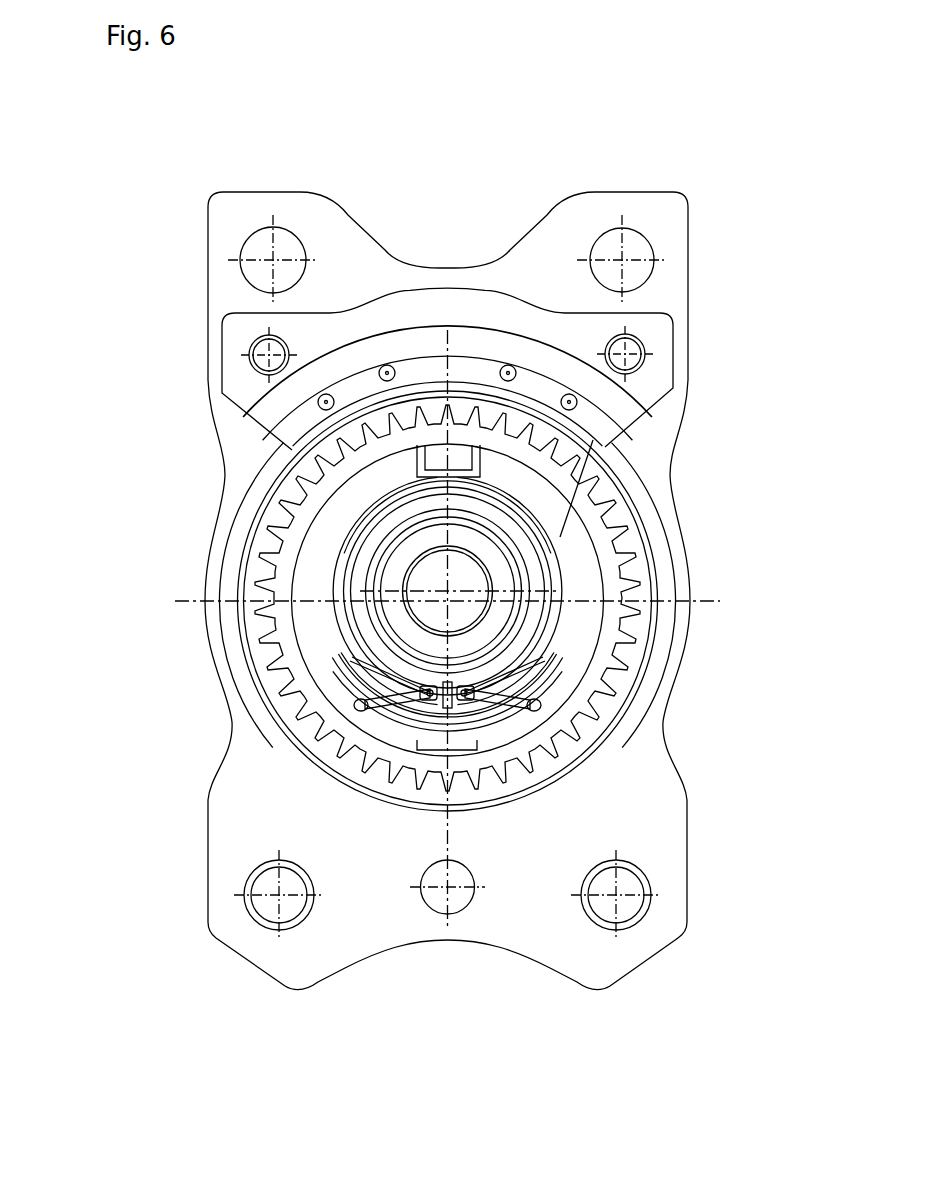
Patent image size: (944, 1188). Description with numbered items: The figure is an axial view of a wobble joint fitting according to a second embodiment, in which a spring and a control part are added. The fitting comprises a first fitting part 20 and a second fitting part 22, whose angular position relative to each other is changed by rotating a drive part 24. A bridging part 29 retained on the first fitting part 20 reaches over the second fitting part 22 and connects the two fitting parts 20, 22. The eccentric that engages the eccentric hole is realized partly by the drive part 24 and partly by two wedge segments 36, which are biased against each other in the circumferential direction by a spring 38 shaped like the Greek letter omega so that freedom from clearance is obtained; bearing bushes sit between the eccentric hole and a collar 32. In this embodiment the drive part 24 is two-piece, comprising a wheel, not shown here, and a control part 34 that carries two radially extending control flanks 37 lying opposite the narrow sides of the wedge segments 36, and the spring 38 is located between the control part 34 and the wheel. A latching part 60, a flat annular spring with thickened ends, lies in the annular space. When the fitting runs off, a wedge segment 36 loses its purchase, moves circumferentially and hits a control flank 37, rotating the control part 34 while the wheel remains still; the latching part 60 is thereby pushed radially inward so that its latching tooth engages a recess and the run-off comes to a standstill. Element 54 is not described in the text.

The first fitting part 20 is at (640, 192).
The second fitting part 22 is at (650, 822).
The bridging part 29 is at (637, 306).
The drive part 24 is at (580, 466).
The control flank 37 is at (383, 541).
The collar 32 is at (365, 535).
The control part 34 is at (557, 537).
The spring 38 is at (550, 607).
The wedge segments 36 is at (520, 667).
The latching part 60 is at (365, 704).
The locking tab 54 is at (403, 437).